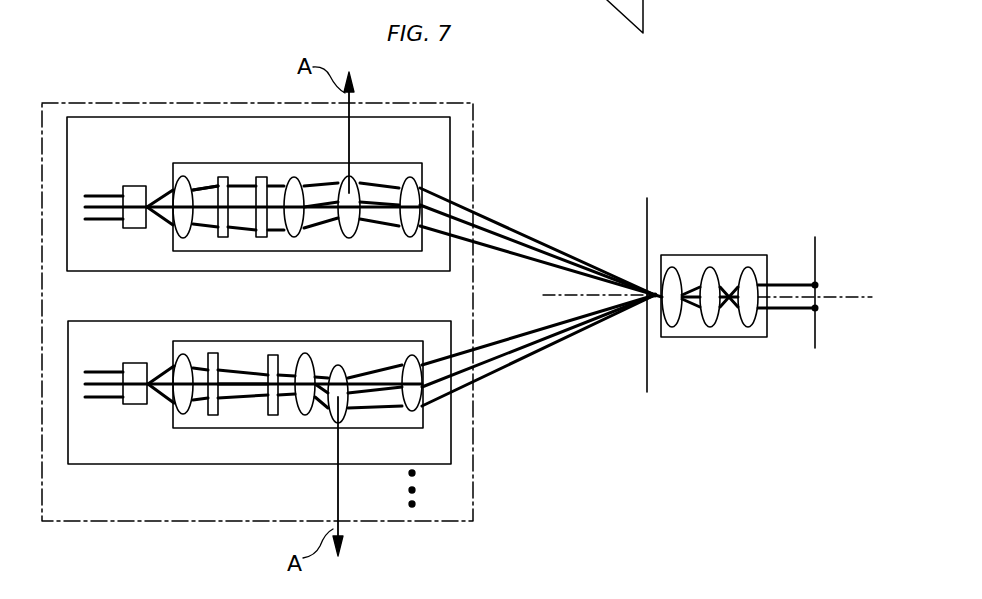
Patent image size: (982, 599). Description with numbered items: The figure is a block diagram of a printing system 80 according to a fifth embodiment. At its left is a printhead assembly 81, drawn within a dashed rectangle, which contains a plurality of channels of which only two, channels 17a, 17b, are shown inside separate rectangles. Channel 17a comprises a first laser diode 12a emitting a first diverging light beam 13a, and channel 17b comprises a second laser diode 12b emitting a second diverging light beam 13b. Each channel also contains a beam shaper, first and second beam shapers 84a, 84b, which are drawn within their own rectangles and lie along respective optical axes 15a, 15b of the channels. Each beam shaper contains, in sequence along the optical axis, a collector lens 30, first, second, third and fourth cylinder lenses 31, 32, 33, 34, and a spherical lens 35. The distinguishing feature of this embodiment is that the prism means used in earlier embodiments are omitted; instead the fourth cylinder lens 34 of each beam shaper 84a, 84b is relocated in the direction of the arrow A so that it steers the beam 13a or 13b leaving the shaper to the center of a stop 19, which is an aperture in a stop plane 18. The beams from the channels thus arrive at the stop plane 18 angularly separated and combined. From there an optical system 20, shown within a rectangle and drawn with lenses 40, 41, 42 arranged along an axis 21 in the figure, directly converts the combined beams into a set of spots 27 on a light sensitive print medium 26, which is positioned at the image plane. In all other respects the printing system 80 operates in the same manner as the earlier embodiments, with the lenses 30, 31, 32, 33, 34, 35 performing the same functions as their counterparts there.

The printhead assembly 81 is at (453, 103).
The channel 17a is at (107, 272).
The channel 17b is at (124, 320).
The first laser diode 12a is at (122, 188).
The second laser diode 12b is at (127, 406).
The first diverging light beam 13a is at (158, 198).
The second diverging light beam 13b is at (158, 378).
The optical axis 15a is at (207, 193).
The optical axis 15b is at (233, 388).
The first beam shaper 84a is at (297, 163).
The second beam shaper 84b is at (286, 429).
The collector lens 30 is at (185, 234).
The first cylinder lens 31 is at (223, 239).
The second cylinder lens 32 is at (261, 239).
The third cylinder lens 33 is at (296, 234).
The fourth cylinder lens 34 is at (349, 236).
The spherical lens 35 is at (407, 236).
The printing system 80 is at (599, 161).
The stop plane 18 is at (645, 210).
The stop 19 is at (645, 303).
The optical axis 21 is at (545, 296).
The optical system 20 is at (707, 255).
The first imaging lens 40 is at (672, 270).
The second imaging lens 41 is at (708, 316).
The third imaging lens 42 is at (747, 317).
The light sensitive print medium 26 is at (815, 247).
The spots 27 is at (820, 310).